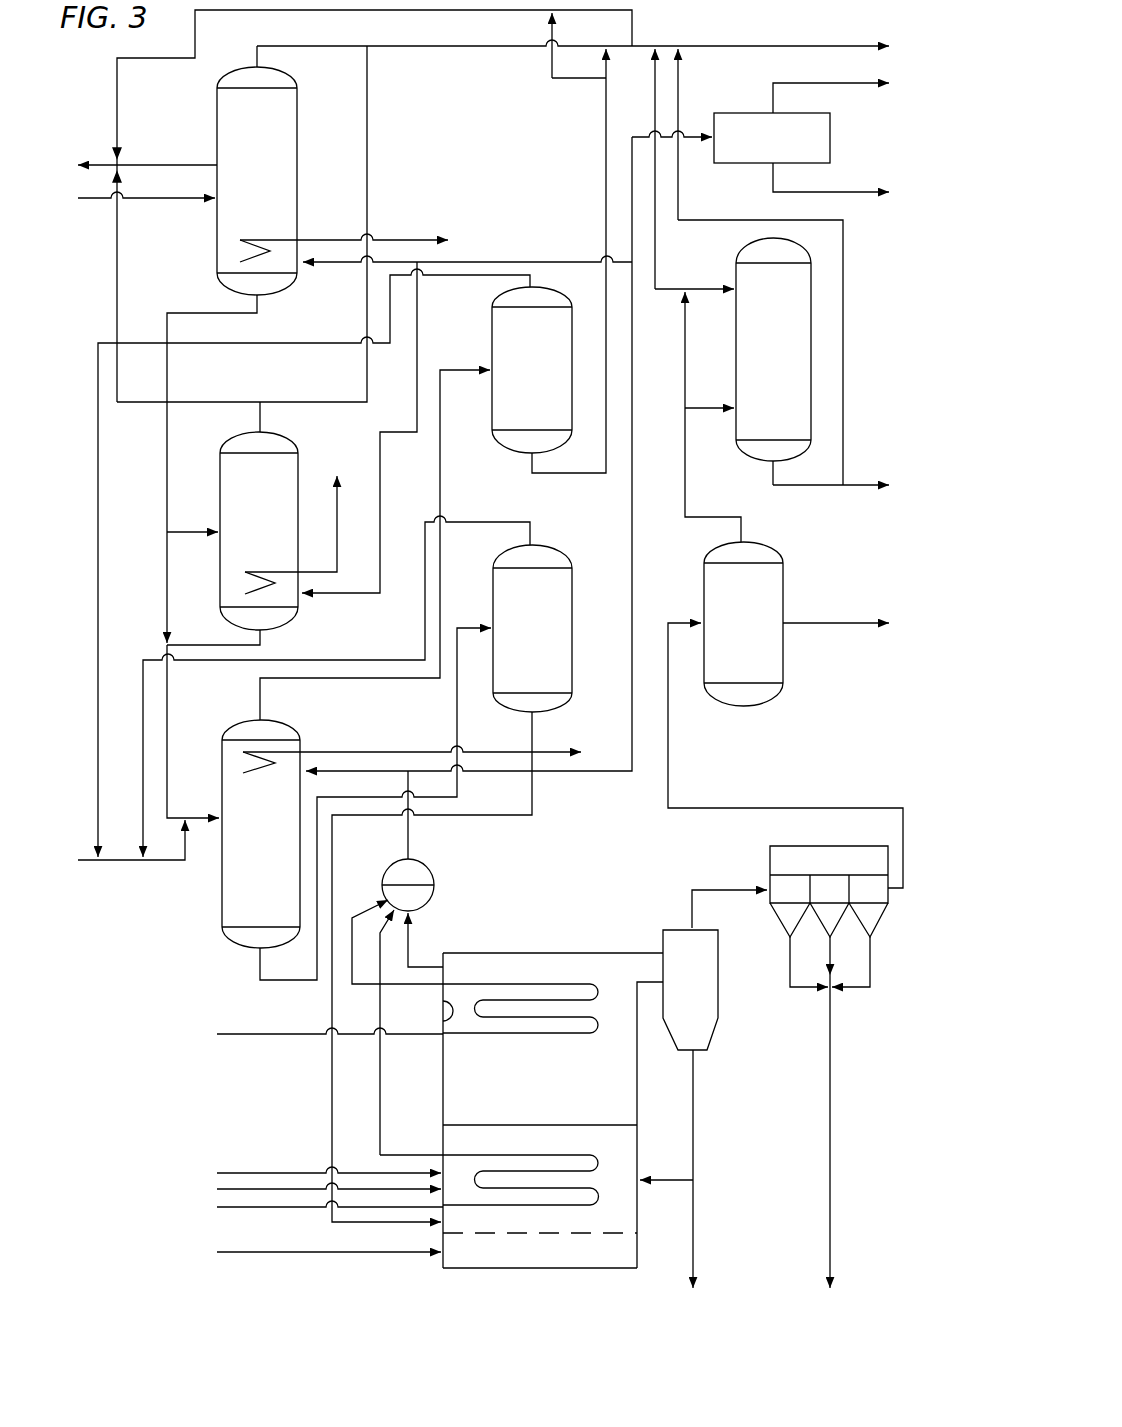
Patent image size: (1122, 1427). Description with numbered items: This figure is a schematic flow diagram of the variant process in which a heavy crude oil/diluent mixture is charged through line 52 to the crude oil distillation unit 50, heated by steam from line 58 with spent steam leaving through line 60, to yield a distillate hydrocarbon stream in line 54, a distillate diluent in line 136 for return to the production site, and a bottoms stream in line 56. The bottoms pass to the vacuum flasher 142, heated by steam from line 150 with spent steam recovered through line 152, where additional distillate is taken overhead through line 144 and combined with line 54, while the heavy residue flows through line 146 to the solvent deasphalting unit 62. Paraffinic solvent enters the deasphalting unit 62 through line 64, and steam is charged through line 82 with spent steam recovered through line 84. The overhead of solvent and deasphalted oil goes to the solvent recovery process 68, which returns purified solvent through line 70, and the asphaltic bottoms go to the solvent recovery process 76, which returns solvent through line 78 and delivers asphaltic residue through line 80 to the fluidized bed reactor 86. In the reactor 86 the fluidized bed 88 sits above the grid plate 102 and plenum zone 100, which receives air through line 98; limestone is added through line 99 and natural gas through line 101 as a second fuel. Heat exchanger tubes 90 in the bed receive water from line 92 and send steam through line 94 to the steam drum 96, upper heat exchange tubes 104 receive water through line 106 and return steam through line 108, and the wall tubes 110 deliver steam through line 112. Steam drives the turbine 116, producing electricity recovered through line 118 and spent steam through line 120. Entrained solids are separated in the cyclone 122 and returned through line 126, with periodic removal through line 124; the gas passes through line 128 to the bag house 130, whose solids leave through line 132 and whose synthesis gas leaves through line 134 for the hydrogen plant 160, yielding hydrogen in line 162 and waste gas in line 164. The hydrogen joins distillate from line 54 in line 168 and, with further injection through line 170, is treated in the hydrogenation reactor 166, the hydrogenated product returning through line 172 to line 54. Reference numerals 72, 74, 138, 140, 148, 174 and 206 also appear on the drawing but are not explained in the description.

The crude oil distillation unit 50 is at (295, 178).
The line 52 is at (157, 200).
The line 54 is at (430, 53).
The line 56 is at (207, 313).
The line 58 is at (565, 261).
The line 60 is at (420, 234).
The solvent deasphalting unit 62 is at (222, 762).
The line 64 is at (165, 862).
The solvent recovery process 68 is at (570, 328).
The line 70 is at (333, 340).
The light gas line 72 is at (528, 463).
The de-asphalted oil line 74 is at (290, 982).
The solvent recovery process 76 is at (573, 640).
The line 78 is at (518, 522).
The line 80 is at (533, 800).
The line 82 is at (602, 772).
The line 84 is at (553, 747).
The fluidized bed reactor 86 is at (518, 946).
The fluidized bed 88 is at (602, 1125).
The heat exchanger tubes 90 is at (503, 1190).
The line 92 is at (243, 1208).
The line 94 is at (381, 1065).
The steam drum 96 is at (395, 863).
The line 98 is at (242, 1254).
The line 99 is at (222, 1193).
The plenum zone 100 is at (570, 1252).
The line 101 is at (253, 1173).
The grid plate 102 is at (538, 1235).
The heat exchange tubes 104 is at (560, 995).
The line 106 is at (243, 1037).
The line 108 is at (363, 912).
The heat exchange tubes 110 is at (447, 1006).
The line 112 is at (410, 946).
The turbine 116 is at (831, 145).
The line 118 is at (807, 82).
The line 120 is at (843, 192).
The cyclone 122 is at (720, 1005).
The line 124 is at (695, 1213).
The line 126 is at (678, 1178).
The line 128 is at (727, 888).
The bag house 130 is at (778, 909).
The line 132 is at (832, 1213).
The line 134 is at (802, 808).
The line 136 is at (155, 165).
The gas line 138 is at (117, 105).
The gas line 140 is at (577, 78).
The vacuum flasher 142 is at (220, 490).
The line 144 is at (370, 150).
The line 146 is at (263, 641).
The de-asphalting feed line 148 is at (171, 588).
The line 150 is at (354, 593).
The line 152 is at (339, 517).
The hydrogen plant 160 is at (779, 593).
The line 162 is at (683, 493).
The line 164 is at (819, 629).
The hydrogenation reactor 166 is at (755, 453).
The line 168 is at (657, 233).
The line 170 is at (688, 405).
The line 172 is at (804, 487).
The hydrogenation reactor 174 is at (846, 397).
The gas line 206 is at (116, 270).